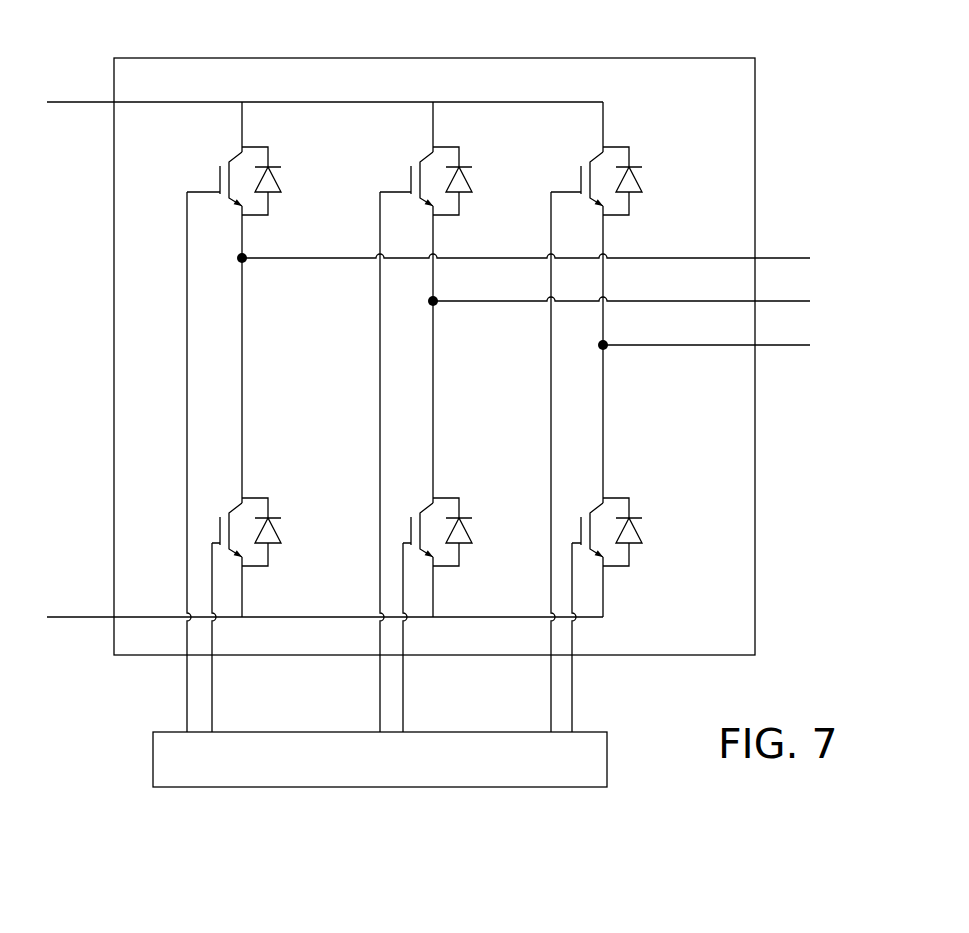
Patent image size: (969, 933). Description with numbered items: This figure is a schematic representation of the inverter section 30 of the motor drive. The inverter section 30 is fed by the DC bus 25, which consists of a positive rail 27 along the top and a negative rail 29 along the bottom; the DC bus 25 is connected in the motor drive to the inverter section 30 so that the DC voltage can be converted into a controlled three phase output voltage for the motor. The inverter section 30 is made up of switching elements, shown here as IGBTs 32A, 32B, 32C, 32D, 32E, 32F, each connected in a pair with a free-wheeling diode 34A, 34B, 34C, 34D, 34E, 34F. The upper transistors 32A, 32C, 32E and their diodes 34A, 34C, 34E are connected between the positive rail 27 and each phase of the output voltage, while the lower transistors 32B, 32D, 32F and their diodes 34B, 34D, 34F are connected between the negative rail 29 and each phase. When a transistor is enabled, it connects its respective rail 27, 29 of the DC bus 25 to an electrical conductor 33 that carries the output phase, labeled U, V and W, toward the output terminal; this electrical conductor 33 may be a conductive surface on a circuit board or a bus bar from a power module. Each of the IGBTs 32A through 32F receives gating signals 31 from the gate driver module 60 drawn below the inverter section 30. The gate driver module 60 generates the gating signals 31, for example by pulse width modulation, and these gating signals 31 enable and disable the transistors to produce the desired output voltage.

The inverter section 30 is at (548, 57).
The positive rail 27 is at (80, 101).
The negative rail 29 is at (75, 619).
The DC bus 25 is at (95, 108).
The gating signals 31 is at (212, 698).
The IGBT 32A is at (210, 182).
The IGBT 32B is at (225, 508).
The IGBT 32C is at (401, 182).
The IGBT 32D is at (416, 508).
The IGBT 32E is at (572, 181).
The IGBT 32F is at (586, 508).
The free-wheeling diode 34A is at (280, 170).
The free-wheeling diode 34B is at (280, 521).
The free-wheeling diode 34C is at (471, 170).
The free-wheeling diode 34D is at (471, 521).
The free-wheeling diode 34E is at (641, 170).
The free-wheeling diode 34F is at (641, 521).
The electrical conductor 33 is at (782, 252).
The gate driver module 60 is at (262, 788).